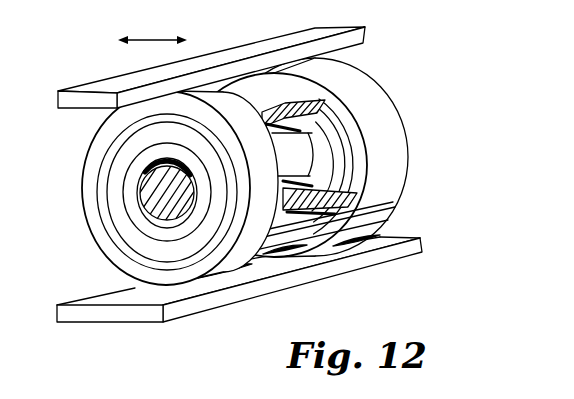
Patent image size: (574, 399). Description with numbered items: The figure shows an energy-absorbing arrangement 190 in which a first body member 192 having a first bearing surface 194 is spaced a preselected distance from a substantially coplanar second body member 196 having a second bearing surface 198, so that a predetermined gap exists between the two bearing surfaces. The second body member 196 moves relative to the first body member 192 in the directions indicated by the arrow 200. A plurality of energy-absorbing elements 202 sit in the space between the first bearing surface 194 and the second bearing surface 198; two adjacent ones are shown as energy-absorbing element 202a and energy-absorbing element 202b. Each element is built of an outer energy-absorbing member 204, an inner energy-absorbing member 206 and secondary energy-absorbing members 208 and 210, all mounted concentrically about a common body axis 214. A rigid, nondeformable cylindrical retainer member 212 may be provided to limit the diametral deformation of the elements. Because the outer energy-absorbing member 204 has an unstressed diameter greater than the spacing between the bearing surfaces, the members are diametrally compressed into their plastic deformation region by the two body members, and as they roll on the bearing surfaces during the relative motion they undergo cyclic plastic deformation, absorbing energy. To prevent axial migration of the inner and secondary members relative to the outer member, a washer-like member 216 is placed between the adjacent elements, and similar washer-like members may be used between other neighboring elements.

The energy-absorbing arrangement 190 is at (100, 30).
The first body member 192 is at (249, 54).
The first bearing surface 194 is at (352, 46).
The second body member 196 is at (260, 253).
The second bearing surface 198 is at (394, 234).
The arrow 200 is at (152, 40).
The energy-absorbing elements 202 is at (86, 166).
The energy-absorbing element 202a is at (105, 127).
The energy-absorbing element 202b is at (377, 83).
The outer energy-absorbing member 204 is at (114, 264).
The inner energy-absorbing member 206 is at (108, 186).
The secondary energy-absorbing member 208 is at (173, 254).
The secondary energy-absorbing member 210 is at (187, 232).
The cylindrical retainer member 212 is at (293, 165).
The common body axis 214 is at (185, 191).
The washer-like member 216 is at (298, 221).